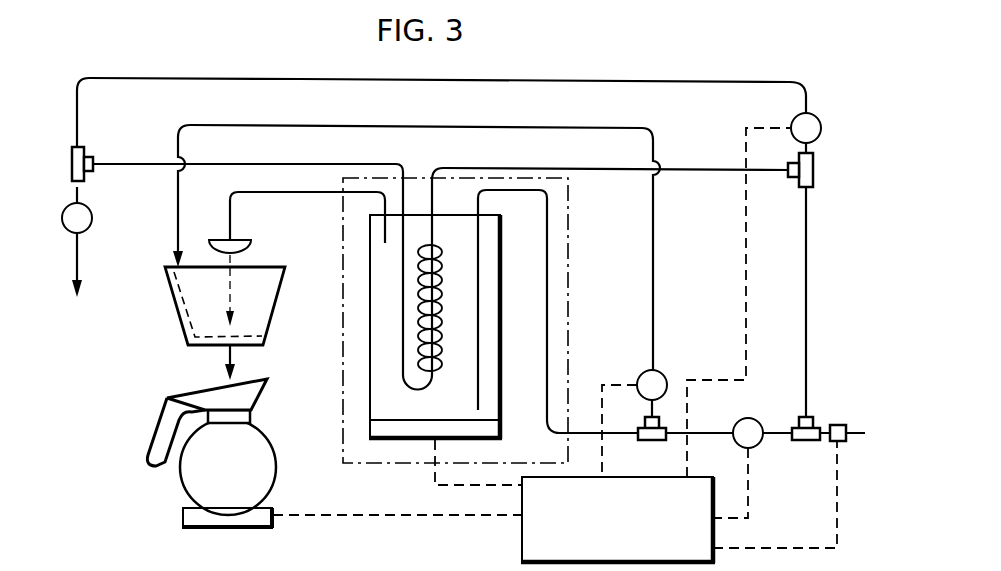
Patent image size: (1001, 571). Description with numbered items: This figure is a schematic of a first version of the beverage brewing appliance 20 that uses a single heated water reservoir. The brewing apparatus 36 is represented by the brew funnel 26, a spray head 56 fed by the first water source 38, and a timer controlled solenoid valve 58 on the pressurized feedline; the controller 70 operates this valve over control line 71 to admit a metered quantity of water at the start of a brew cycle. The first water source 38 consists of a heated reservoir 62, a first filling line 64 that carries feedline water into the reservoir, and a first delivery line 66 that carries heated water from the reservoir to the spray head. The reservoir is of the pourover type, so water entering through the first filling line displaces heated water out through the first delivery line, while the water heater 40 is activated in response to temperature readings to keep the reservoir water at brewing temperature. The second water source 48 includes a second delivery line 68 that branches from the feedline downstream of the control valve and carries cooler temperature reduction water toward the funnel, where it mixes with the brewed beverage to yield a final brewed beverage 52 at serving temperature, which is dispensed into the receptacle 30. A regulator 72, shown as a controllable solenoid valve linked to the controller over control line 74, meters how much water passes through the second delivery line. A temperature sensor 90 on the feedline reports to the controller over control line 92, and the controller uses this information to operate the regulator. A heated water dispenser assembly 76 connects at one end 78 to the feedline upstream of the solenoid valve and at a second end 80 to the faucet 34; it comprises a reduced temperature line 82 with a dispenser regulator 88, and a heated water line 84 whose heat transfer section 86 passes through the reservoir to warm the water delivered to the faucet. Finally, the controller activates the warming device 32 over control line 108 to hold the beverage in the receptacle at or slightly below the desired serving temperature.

The beverage brewing appliance 20 is at (96, 35).
The brewing funnel 26 is at (185, 339).
The receptacle 30 is at (181, 470).
The warming device 32 is at (188, 513).
The faucet 34 is at (92, 220).
The brewing apparatus 36 is at (141, 320).
The first water source 38 is at (342, 293).
The water heater 40 is at (375, 429).
The second water source 48 is at (622, 118).
The final brewed beverage 52 is at (224, 361).
The spray head 56 is at (248, 246).
The timer controlled solenoid valve 58 is at (758, 445).
The heated reservoir 62 is at (370, 404).
The first filling line 64 is at (549, 292).
The first delivery line 66 is at (252, 192).
The second delivery line 68 is at (178, 130).
The controller 70 is at (522, 545).
The control line 71 is at (752, 512).
The regulator 72 is at (665, 383).
The control line 74 is at (603, 449).
The heated water dispenser assembly 76 is at (60, 125).
The one end 78 is at (800, 418).
The second end 80 is at (72, 188).
The reduced temperature line 82 is at (748, 81).
The heated water line 84 is at (700, 167).
The heat transfer section 86 is at (440, 322).
The dispenser regulator 88 is at (813, 115).
The temperature sensor 90 is at (838, 424).
The control line 92 is at (837, 523).
The control line 108 is at (418, 520).